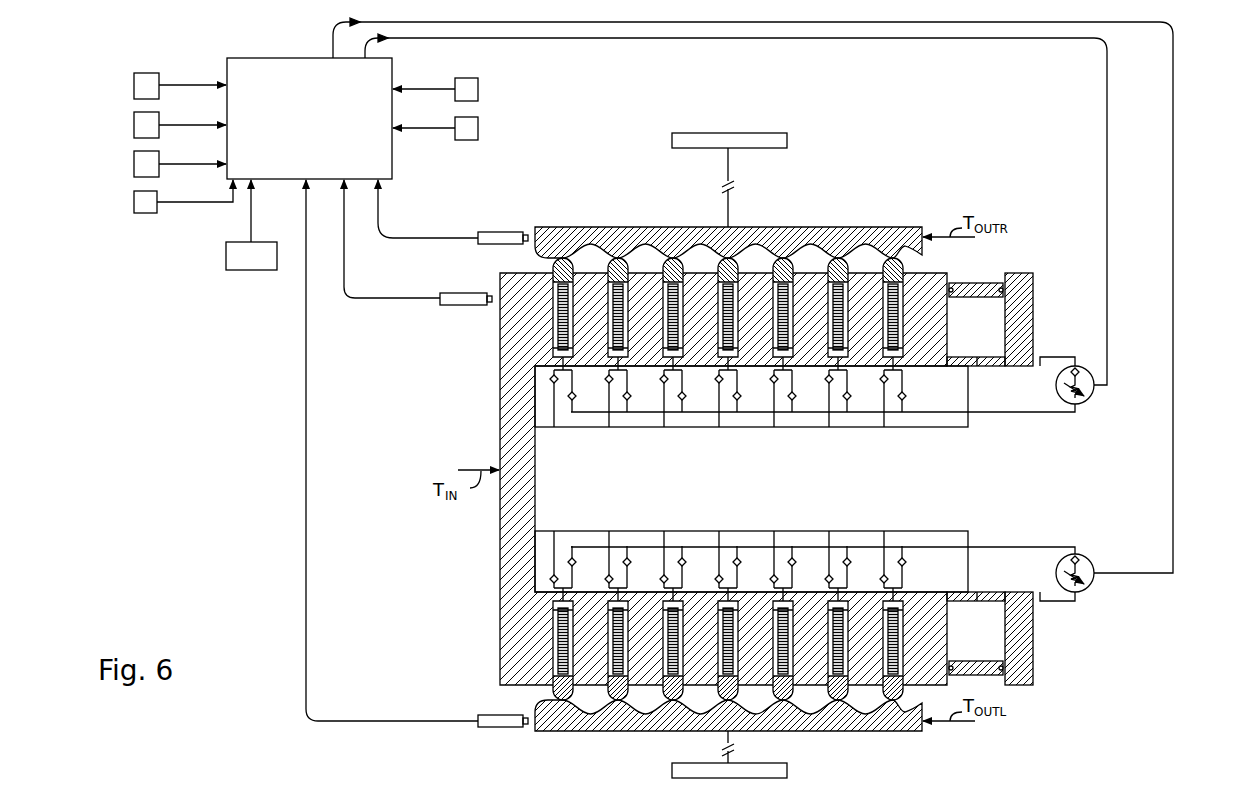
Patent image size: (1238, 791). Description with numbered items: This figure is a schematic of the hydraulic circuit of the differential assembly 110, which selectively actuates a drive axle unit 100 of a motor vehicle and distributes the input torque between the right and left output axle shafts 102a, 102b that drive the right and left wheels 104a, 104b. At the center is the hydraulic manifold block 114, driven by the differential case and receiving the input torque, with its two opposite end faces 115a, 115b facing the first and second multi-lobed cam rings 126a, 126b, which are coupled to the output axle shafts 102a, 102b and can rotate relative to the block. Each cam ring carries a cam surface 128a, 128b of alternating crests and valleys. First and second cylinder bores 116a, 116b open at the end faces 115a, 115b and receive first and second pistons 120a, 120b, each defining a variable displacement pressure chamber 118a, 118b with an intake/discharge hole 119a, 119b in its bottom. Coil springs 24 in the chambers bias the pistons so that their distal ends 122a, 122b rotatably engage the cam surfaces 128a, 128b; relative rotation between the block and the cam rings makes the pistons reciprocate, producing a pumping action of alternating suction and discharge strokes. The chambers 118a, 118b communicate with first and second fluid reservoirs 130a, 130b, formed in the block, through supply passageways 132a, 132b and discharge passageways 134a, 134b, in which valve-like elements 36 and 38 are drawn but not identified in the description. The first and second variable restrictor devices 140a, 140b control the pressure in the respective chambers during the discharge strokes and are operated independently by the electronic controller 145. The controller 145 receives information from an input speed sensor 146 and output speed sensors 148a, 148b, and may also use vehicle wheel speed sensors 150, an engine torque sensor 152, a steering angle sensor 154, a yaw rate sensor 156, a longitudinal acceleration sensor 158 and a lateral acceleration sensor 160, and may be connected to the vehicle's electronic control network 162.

The drive axle unit 100 is at (1165, 660).
The differential assembly 110 is at (436, 557).
The hydraulic manifold block 114 is at (499, 397).
The end face 115a is at (500, 273).
The end face 115b is at (500, 686).
The first cylinder bores 116a is at (770, 367).
The second cylinder bores 116b is at (770, 596).
The first variable displacement pressure chamber 118a is at (858, 367).
The second variable displacement pressure chamber 118b is at (858, 596).
The intake/discharge hole 119a is at (690, 367).
The intake/discharge hole 119b is at (690, 596).
The first pistons 120a is at (803, 256).
The second pistons 120b is at (815, 716).
The distal ends 122a is at (900, 252).
The distal ends 122b is at (895, 727).
The first multi-lobed cam ring 126a is at (596, 226).
The second multi-lobed cam ring 126b is at (565, 733).
The first cam surface 128a is at (655, 250).
The second cam surface 128b is at (607, 708).
The first fluid reservoir 130a is at (985, 330).
The second fluid reservoir 130b is at (985, 645).
The first supply passageway 132a is at (906, 428).
The second supply passageway 132b is at (906, 531).
The first discharge passageway 134a is at (1010, 413).
The second discharge passageway 134b is at (1010, 546).
The first variable restrictor device 140a is at (1093, 395).
The second variable restrictor device 140b is at (1093, 583).
The electronic controller 145 is at (226, 58).
The input speed sensor 146 is at (456, 305).
The output speed sensor 148a is at (496, 232).
The output speed sensor 148b is at (495, 728).
The vehicle wheel speed sensors 150 is at (134, 86).
The engine torque sensor 152 is at (134, 126).
The steering angle sensor 154 is at (134, 165).
The yaw rate sensor 156 is at (134, 203).
The longitudinal acceleration sensor 158 is at (478, 92).
The lateral acceleration sensor 160 is at (478, 130).
The electronic control network 162 is at (226, 260).
The right output axle shaft 102a is at (727, 164).
The left output axle shaft 102b is at (727, 743).
The right wheel 104a is at (672, 133).
The left wheel 104b is at (760, 763).
The coil springs 24 is at (904, 347).
The first valve 36 is at (608, 382).
The second valve 38 is at (625, 397).